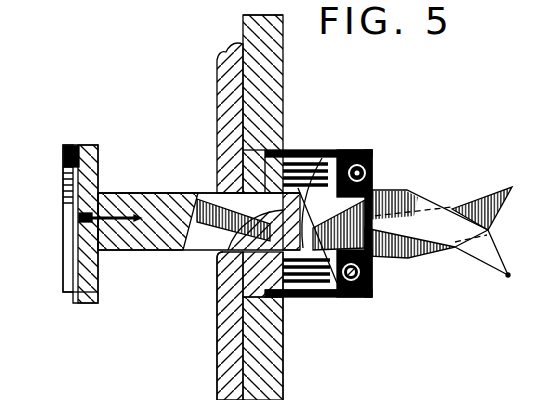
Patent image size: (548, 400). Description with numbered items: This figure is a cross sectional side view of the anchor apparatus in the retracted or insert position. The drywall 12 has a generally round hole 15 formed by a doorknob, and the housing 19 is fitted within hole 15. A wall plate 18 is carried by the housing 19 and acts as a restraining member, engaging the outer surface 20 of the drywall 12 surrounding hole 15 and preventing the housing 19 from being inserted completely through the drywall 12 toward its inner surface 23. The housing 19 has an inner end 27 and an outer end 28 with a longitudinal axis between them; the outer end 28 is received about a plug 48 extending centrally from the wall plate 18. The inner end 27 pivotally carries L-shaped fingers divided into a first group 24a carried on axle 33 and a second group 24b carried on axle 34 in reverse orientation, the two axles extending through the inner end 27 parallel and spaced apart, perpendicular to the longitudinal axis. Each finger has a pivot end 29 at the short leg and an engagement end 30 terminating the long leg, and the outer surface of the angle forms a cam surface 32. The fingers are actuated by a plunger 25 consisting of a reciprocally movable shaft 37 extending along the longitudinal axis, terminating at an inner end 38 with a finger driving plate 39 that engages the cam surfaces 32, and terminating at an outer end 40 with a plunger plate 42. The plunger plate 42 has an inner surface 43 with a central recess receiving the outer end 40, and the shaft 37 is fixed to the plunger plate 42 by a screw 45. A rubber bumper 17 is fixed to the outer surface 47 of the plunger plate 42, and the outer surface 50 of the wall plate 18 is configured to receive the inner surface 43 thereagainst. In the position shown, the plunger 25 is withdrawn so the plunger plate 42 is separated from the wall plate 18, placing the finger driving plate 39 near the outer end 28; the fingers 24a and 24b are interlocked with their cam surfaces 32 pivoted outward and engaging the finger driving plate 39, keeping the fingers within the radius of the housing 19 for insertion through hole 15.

The drywall 12 is at (270, 80).
The hole 15 is at (268, 144).
The rubber bumper 17 is at (55, 153).
The wall plate 18 is at (230, 283).
The housing 19 is at (360, 138).
The outer surface of drywall 20 is at (223, 52).
The inner surface of drywall 23 is at (283, 18).
The first group of fingers 24a is at (420, 262).
The second group of fingers 24b is at (428, 192).
The plunger 25 is at (191, 185).
The inner end of housing 27 is at (377, 152).
The outer end of housing 28 is at (267, 297).
The pivot end of fingers 29 is at (333, 298).
The engagement end of fingers 30 is at (508, 277).
The cam surface 32 is at (355, 147).
The axle 33 is at (378, 172).
The axle 34 is at (364, 296).
The shaft 37 is at (163, 193).
The inner end of shaft 38 is at (230, 258).
The finger driving plate 39 is at (228, 292).
The outer end of shaft 40 is at (103, 193).
The plunger plate 42 is at (88, 142).
The inner surface of plunger plate 43 is at (100, 148).
The screw 45 is at (120, 250).
The outer surface of plunger plate 47 is at (68, 292).
The plug 48 is at (248, 146).
The outer surface of wall plate 50 is at (215, 372).